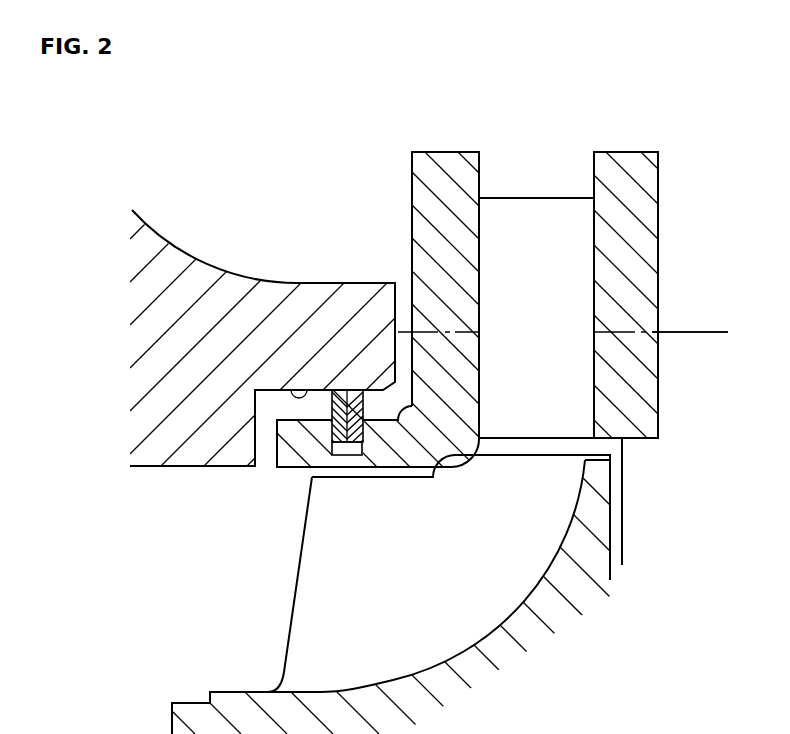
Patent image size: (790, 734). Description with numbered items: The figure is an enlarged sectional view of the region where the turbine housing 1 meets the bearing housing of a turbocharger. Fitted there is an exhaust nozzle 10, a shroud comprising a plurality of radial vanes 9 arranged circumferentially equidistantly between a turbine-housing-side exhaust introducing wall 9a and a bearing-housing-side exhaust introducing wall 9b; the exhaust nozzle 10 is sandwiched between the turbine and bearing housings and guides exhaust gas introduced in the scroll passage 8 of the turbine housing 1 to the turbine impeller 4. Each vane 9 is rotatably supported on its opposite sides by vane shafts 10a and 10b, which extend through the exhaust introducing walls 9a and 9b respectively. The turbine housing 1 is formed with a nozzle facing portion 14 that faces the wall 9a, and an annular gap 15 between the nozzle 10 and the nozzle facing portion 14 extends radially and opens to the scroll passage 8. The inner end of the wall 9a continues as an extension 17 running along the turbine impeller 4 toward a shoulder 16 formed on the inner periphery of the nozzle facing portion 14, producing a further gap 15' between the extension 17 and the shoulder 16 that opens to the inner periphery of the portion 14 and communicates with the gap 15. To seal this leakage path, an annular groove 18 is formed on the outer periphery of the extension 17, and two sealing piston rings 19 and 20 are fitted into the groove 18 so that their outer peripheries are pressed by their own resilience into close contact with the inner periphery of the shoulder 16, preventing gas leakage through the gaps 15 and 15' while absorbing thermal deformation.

The turbine housing 1 is at (176, 247).
The turbine impeller 4 is at (312, 633).
The scroll passage 8 is at (270, 176).
The radial vanes 9 is at (532, 213).
The turbine-housing-side exhaust introducing wall 9a is at (437, 170).
The bearing-housing-side exhaust introducing wall 9b is at (617, 172).
The exhaust nozzle 10 is at (410, 172).
The turbine-housing-side vane shaft 10a is at (475, 322).
The bearing-housing-side vane shaft 10b is at (677, 332).
The nozzle facing portion 14 is at (375, 352).
The annular gap 15 is at (383, 283).
The gap 15' is at (272, 462).
The shoulder 16 is at (280, 388).
The extension 17 is at (420, 437).
The annular groove 18 is at (357, 455).
The sealing piston ring 19 is at (340, 416).
The sealing piston ring 20 is at (352, 444).